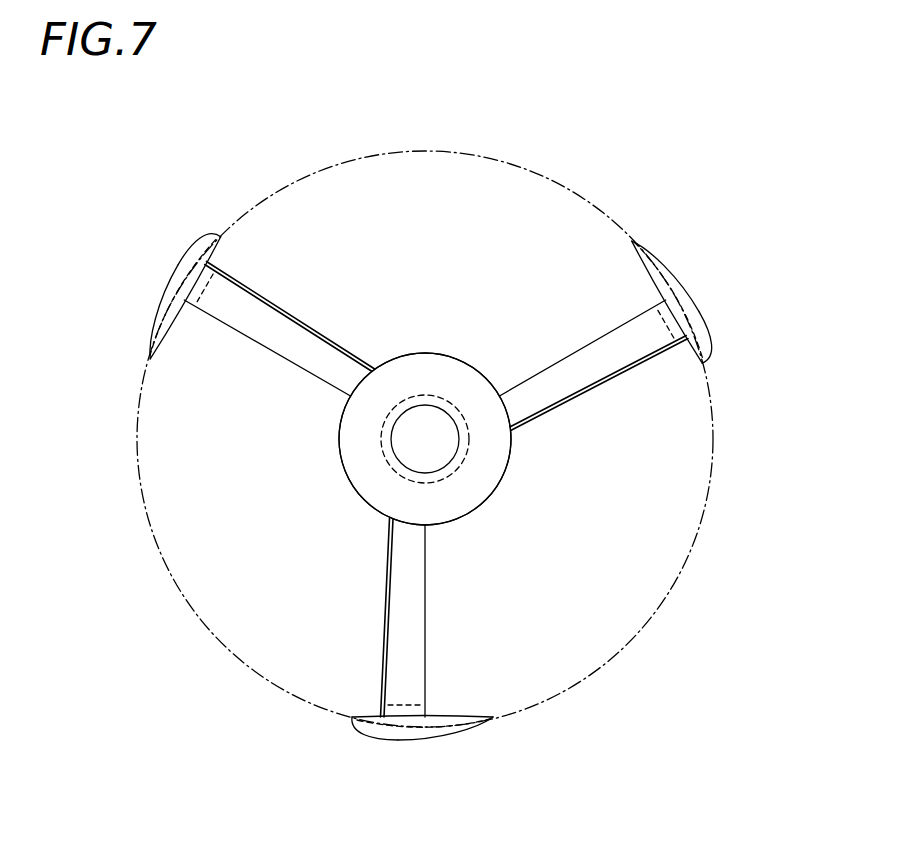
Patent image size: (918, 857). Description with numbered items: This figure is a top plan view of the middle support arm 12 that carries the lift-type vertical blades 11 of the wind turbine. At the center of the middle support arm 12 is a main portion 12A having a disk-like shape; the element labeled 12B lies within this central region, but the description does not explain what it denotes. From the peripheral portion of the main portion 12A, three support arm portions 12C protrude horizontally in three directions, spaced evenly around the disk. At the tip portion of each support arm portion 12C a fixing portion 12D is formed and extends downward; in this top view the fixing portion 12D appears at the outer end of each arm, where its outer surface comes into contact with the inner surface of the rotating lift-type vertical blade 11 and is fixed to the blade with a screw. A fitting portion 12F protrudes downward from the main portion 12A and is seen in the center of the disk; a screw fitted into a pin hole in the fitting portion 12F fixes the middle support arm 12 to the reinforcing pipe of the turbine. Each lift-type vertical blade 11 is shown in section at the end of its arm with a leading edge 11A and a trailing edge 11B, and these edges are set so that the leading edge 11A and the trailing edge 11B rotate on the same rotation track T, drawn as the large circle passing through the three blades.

The lift-type vertical blade 11 is at (172, 257).
The leading edge 11A is at (217, 236).
The trailing edge 11B is at (145, 357).
The middle support arm 12 is at (468, 348).
The main portion 12A is at (350, 487).
The shaft hole 12B is at (432, 452).
The support arm portion 12C is at (247, 290).
The fixing portion 12D is at (206, 318).
The fitting portion 12F is at (468, 454).
The rotation track T is at (632, 641).